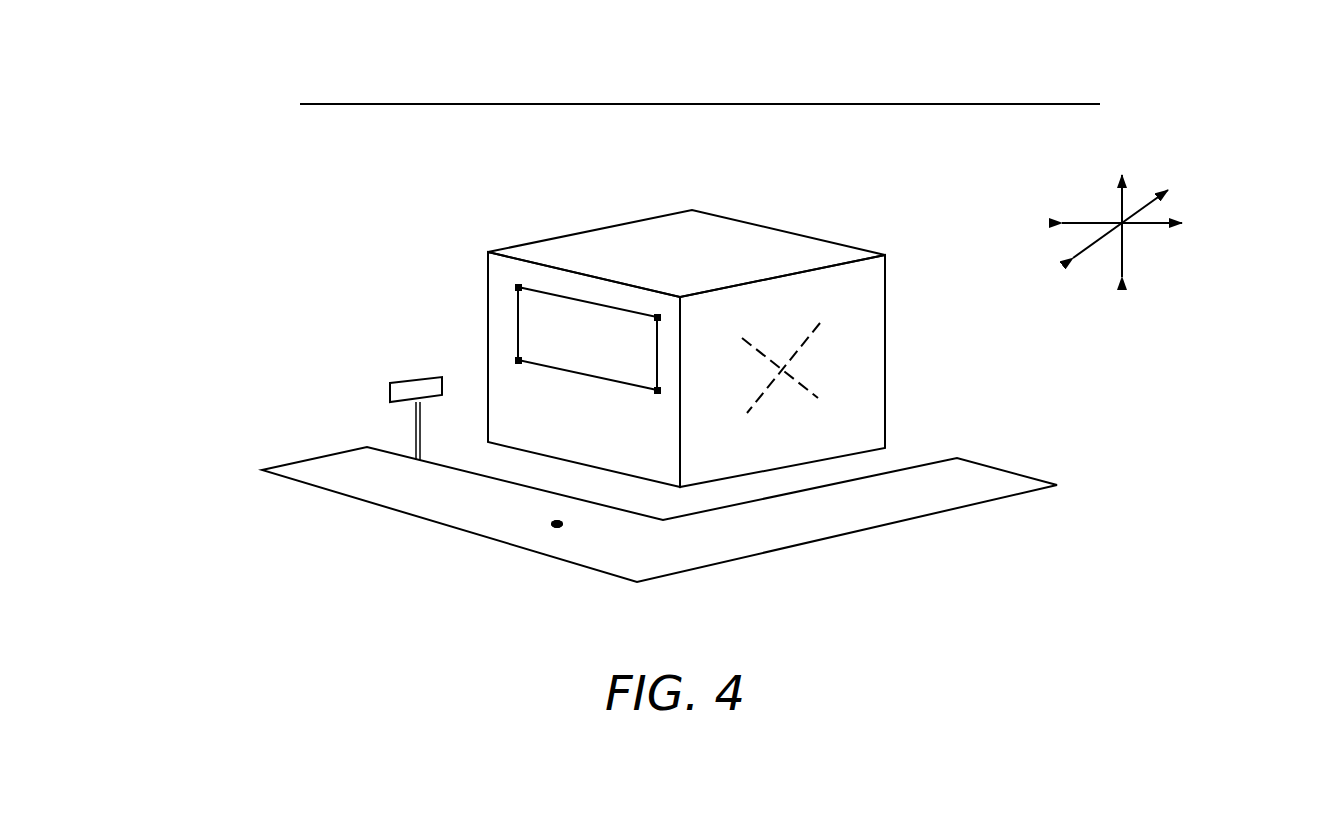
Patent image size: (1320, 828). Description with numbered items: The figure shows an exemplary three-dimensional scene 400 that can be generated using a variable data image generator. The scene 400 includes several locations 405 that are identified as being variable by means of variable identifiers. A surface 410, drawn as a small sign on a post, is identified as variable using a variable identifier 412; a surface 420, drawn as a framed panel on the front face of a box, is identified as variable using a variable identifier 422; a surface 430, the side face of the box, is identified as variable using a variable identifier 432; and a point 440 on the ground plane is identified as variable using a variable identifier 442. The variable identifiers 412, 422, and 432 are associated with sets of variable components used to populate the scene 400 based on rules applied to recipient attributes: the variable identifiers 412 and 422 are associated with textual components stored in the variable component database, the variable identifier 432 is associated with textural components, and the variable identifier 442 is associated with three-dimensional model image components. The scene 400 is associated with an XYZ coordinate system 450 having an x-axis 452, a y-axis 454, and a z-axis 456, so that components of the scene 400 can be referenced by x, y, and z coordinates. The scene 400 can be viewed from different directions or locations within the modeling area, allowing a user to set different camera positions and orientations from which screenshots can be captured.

The 3D scene 400 is at (290, 82).
The locations 405 is at (517, 323).
The surface 410 is at (390, 396).
The variable identifier 412 is at (427, 388).
The surface 420 is at (608, 328).
The variable identifier 422 is at (550, 292).
The surface 430 is at (865, 273).
The variable identifier 432 is at (822, 370).
The point 440 is at (546, 523).
The variable identifier 442 is at (565, 525).
The XYZ coordinate system 450 is at (1147, 182).
The x-axis 452 is at (1202, 223).
The y-axis 454 is at (1118, 145).
The z-axis 456 is at (1192, 180).